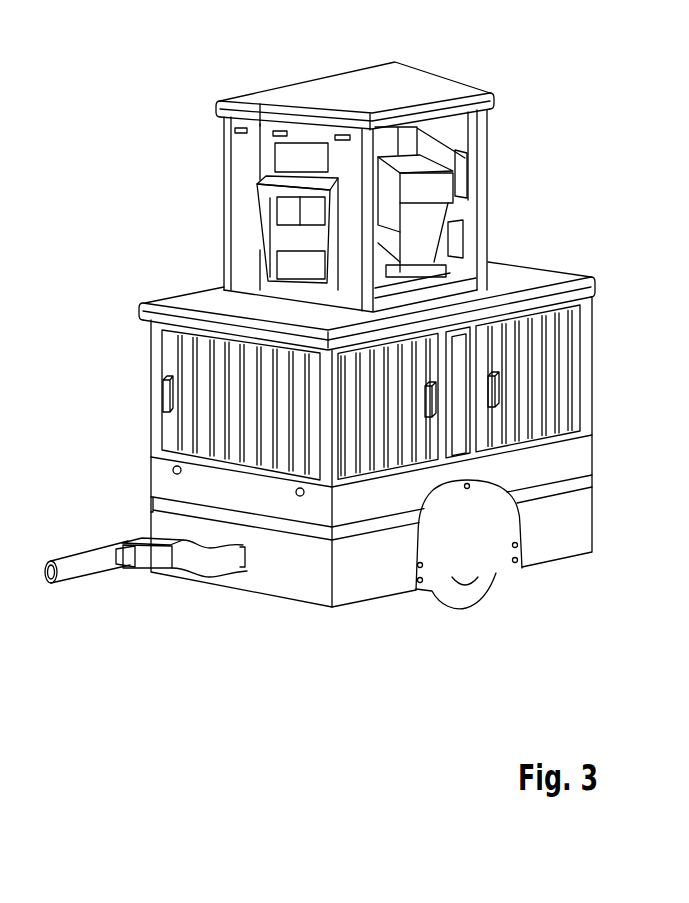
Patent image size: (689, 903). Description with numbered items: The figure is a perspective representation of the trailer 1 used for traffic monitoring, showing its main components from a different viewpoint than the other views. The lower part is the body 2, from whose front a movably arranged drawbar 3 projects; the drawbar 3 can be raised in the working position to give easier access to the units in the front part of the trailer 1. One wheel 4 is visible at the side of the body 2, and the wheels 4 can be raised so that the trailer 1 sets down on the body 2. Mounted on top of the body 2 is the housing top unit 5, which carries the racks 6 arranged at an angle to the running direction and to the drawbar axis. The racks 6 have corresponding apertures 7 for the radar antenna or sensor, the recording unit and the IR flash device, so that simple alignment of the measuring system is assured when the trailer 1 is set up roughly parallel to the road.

The trailer 1 is at (164, 153).
The body 2 is at (578, 509).
The drawbar 3 is at (72, 566).
The wheel 4 is at (462, 598).
The housing top unit 5 is at (307, 90).
The rack 6 is at (437, 178).
The apertures 7 is at (280, 153).